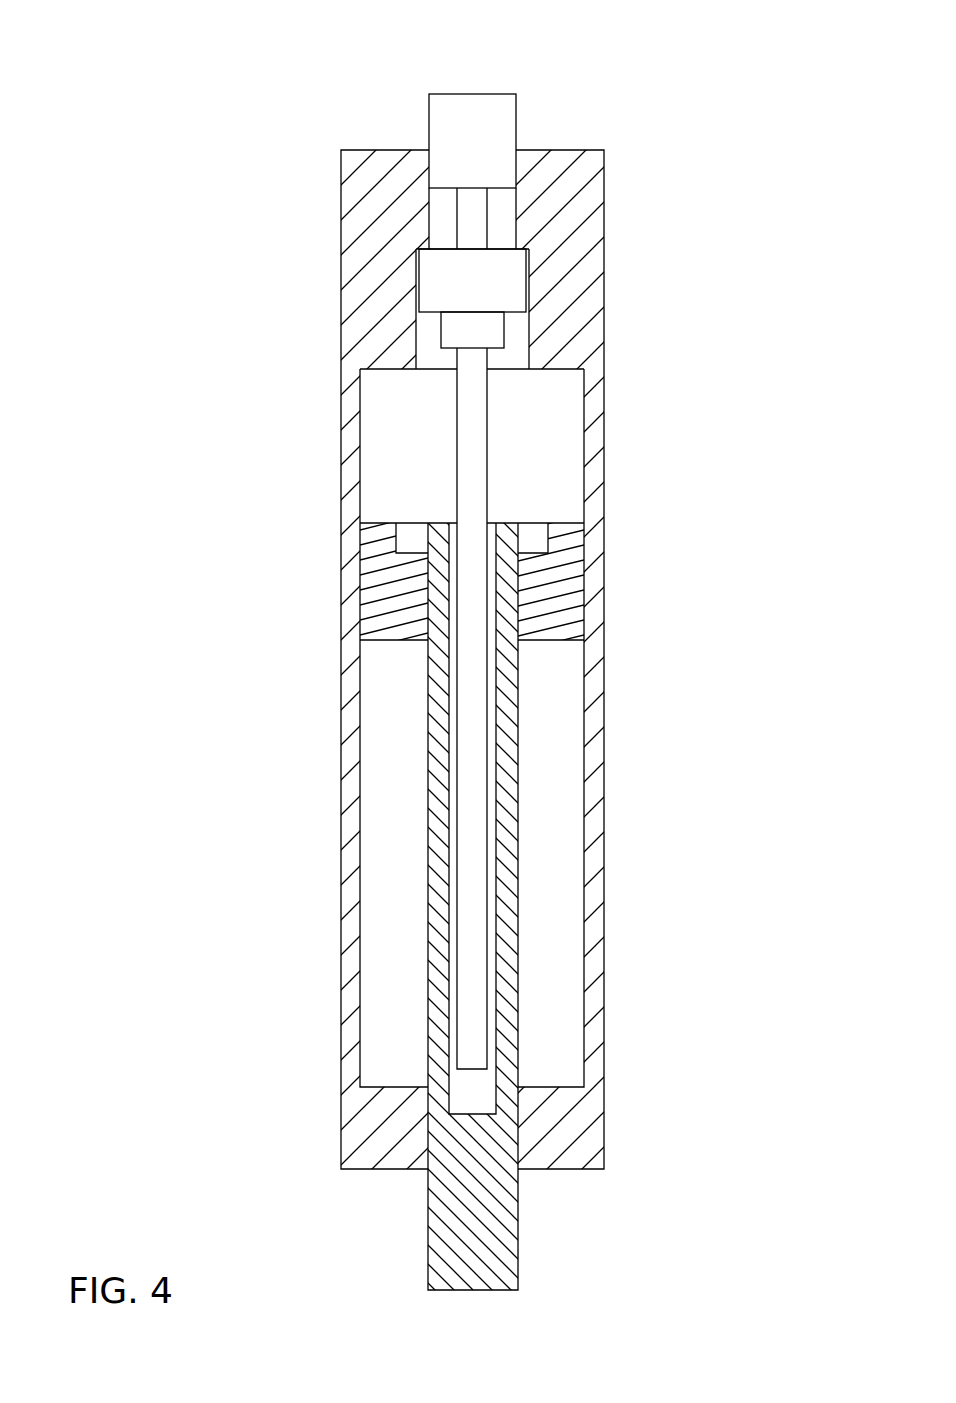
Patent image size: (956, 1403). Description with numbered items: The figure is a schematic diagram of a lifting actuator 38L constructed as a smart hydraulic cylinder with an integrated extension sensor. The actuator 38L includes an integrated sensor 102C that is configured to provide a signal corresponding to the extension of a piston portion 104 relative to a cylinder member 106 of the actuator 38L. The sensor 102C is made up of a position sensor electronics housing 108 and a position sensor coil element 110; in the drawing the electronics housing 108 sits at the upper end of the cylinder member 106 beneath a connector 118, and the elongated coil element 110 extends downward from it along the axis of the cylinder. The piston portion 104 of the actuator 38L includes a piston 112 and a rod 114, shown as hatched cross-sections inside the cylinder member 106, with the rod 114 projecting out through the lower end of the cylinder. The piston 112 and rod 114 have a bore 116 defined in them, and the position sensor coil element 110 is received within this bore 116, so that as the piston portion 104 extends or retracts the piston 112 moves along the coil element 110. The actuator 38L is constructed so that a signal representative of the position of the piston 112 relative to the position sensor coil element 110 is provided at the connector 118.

The actuator 38L is at (673, 44).
The cylinder member 106 is at (604, 762).
The connector 118 is at (493, 111).
The integrated sensor 102C is at (574, 659).
The position sensor electronics housing 108 is at (490, 273).
The position sensor coil element 110 is at (477, 433).
The piston portion 104 is at (567, 901).
The piston 112 is at (562, 589).
The rod 114 is at (517, 858).
The bore 116 is at (448, 748).